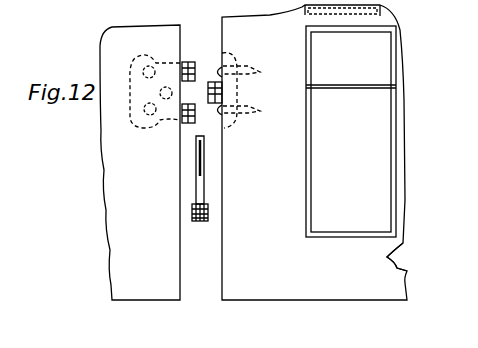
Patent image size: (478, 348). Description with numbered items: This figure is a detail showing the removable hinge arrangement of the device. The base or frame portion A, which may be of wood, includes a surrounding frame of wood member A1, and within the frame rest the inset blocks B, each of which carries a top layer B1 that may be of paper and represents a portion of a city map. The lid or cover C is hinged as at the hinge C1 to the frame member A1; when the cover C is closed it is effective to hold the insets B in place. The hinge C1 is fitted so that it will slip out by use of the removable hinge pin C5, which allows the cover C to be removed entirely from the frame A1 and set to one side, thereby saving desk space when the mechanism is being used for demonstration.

The base or frame portion A is at (407, 288).
The surrounding frame of wood member A1 is at (388, 257).
The inset blocks B is at (398, 18).
The top layer B1 is at (378, 160).
The lid or cover C is at (110, 177).
The hinge C1 is at (187, 62).
The removable hinge pin C5 is at (200, 223).